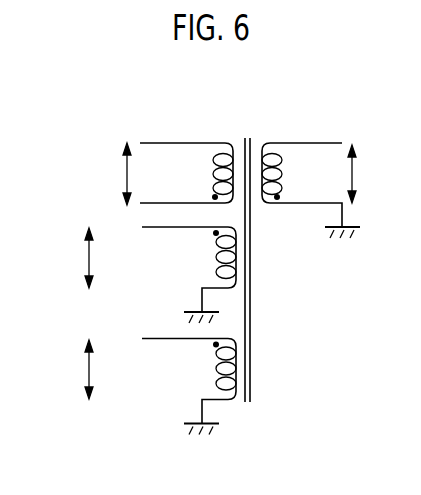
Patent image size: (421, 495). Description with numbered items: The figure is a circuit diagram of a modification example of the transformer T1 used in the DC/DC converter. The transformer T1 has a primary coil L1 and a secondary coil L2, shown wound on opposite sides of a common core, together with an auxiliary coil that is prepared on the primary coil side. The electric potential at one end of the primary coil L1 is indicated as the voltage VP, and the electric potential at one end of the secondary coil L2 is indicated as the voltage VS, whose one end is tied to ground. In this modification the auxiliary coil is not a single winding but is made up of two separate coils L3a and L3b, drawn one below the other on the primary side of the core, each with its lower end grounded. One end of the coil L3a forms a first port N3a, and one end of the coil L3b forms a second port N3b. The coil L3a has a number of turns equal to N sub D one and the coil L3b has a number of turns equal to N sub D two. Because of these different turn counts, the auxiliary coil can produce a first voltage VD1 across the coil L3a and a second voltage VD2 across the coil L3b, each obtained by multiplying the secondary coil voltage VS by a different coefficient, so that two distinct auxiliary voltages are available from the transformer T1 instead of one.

The transformer T1 is at (254, 472).
The primary coil L1 is at (222, 133).
The secondary coil L2 is at (272, 133).
The coil L3a is at (208, 371).
The coil L3b is at (208, 259).
The first port N3a is at (147, 338).
The second port N3b is at (147, 227).
The electric potential of one end of the primary coil VP is at (113, 174).
The voltage of the secondary coil VS is at (364, 174).
The first voltage VD1 is at (69, 369).
The second voltage VD2 is at (69, 258).